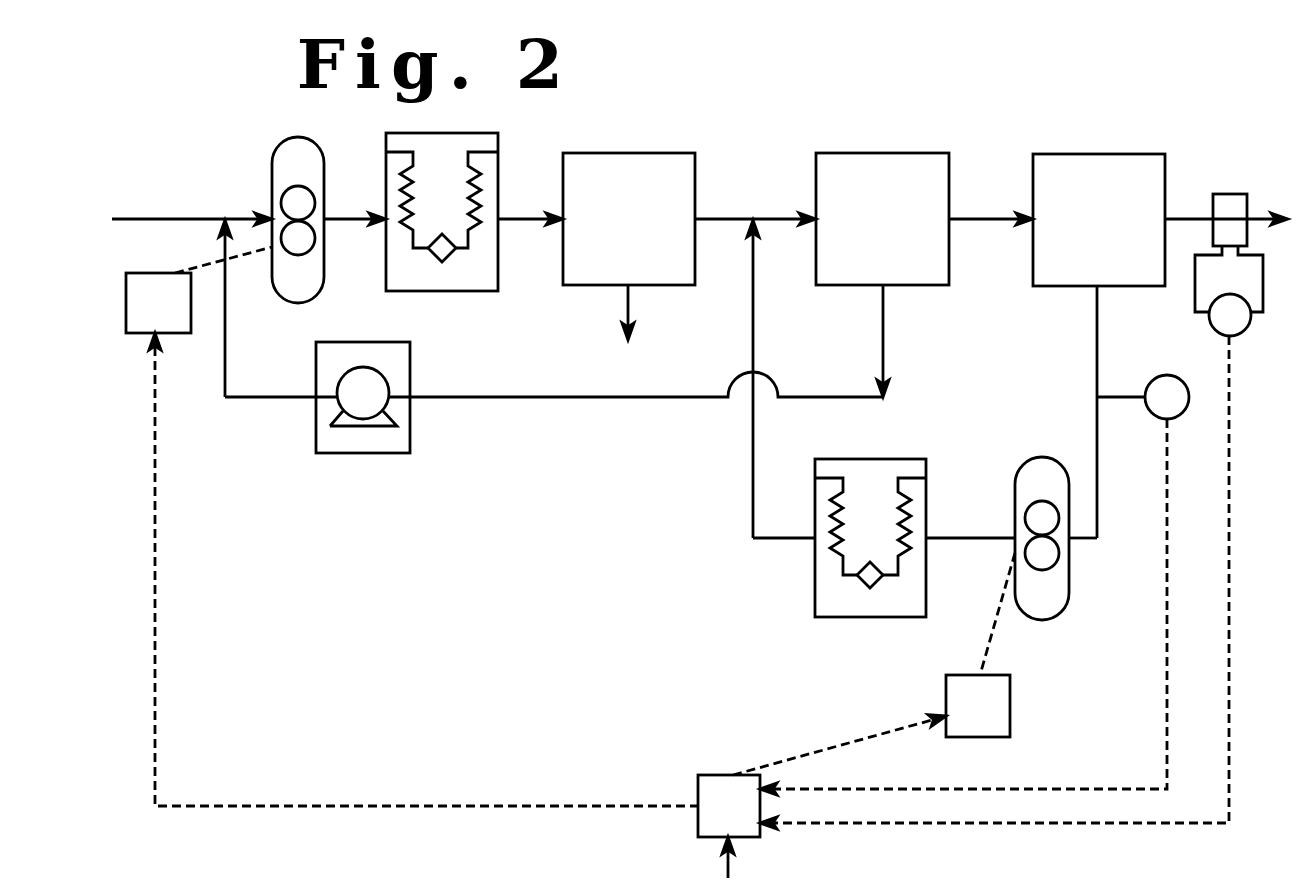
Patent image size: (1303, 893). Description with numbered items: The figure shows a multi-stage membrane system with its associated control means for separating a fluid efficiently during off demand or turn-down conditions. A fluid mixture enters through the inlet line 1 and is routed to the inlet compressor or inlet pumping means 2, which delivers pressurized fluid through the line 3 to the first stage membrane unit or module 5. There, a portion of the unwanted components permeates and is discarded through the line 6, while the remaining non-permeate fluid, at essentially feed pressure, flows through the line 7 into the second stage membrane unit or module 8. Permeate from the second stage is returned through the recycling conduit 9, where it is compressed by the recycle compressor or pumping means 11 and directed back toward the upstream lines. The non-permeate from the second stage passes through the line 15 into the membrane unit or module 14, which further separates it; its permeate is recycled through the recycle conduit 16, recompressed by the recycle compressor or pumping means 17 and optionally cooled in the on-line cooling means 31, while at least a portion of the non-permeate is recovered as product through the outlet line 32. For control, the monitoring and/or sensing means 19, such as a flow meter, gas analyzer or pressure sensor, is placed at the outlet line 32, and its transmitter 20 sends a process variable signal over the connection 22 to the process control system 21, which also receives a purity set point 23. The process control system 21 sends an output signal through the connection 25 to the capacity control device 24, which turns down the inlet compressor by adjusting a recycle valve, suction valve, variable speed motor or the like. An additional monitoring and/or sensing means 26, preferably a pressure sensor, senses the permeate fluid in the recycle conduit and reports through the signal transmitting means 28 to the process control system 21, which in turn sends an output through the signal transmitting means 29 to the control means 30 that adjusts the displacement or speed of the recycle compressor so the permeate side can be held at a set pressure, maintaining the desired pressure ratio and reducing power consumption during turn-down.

The inlet line 1 is at (157, 218).
The inlet compressor or inlet pumping means 2 is at (272, 187).
The line 3 is at (345, 218).
The first stage membrane unit or module 5 is at (635, 153).
The line 6 is at (630, 303).
The line 7 is at (777, 218).
The second stage membrane unit or module 8 is at (927, 153).
The recycling conduit 9 is at (885, 318).
The recycle compressor or pumping means 11 is at (330, 453).
The membrane unit or module 14 is at (1073, 155).
The line 15 is at (993, 218).
The recycle conduit 16 is at (963, 538).
The recycle compressor or pumping means 17 is at (1017, 457).
The monitoring and/or sensing means 19 is at (1240, 205).
The transmitter 20 is at (1250, 325).
The process control system 21 is at (698, 787).
The connection 22 is at (1230, 715).
The purity set point 23 is at (727, 865).
The capacity control device 24 is at (191, 315).
The connection 25 is at (348, 805).
The monitoring and/or sensing means 26 is at (1147, 380).
The signal transmitting means 28 is at (1163, 632).
The signal transmitting means 29 is at (842, 740).
The control means 30 is at (957, 675).
The on-line cooling means 31 is at (852, 593).
The outlet line 32 is at (1195, 218).